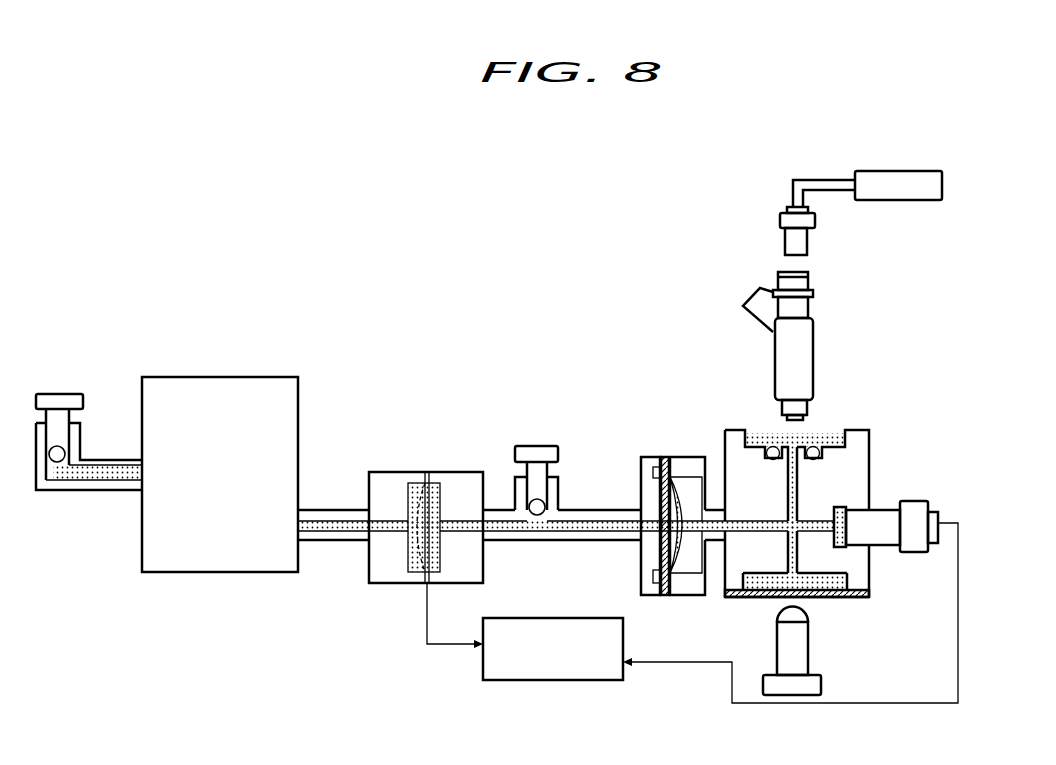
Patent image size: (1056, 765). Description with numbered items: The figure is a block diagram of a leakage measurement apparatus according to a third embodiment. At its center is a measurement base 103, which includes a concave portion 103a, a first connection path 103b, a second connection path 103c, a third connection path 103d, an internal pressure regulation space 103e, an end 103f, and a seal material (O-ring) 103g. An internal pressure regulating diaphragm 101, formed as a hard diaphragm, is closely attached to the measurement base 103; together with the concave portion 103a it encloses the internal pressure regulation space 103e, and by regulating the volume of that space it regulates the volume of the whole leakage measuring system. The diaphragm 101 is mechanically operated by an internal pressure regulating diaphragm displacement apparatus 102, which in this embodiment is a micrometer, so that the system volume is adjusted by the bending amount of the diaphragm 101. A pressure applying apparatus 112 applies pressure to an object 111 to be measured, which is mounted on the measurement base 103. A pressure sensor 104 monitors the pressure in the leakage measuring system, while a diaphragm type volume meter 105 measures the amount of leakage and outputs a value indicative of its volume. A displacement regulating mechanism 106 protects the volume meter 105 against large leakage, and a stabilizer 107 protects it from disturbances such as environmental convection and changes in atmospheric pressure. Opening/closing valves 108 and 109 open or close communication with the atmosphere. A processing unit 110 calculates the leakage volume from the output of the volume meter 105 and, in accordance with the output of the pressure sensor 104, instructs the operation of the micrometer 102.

The internal pressure regulating diaphragm 101 is at (870, 589).
The internal pressure regulating diaphragm displacement apparatus 102 is at (808, 652).
The measurement base 103 is at (869, 484).
The concave portion 103a is at (838, 597).
The first connection path 103b is at (797, 487).
The second connection path 103c is at (820, 520).
The third connection path 103d is at (745, 520).
The internal pressure regulation space 103e is at (757, 575).
The end 103f is at (805, 440).
The seal material (O-ring) 103g is at (817, 440).
The pressure sensor 104 is at (917, 500).
The diaphragm type volume meter 105 is at (433, 472).
The displacement regulating mechanism 106 is at (680, 457).
The stabilizer 107 is at (231, 377).
The opening/closing valve 108 is at (546, 446).
The opening/closing valve 109 is at (68, 394).
The processing unit 110 is at (483, 665).
The object to be measured 111 is at (815, 347).
The pressure applying apparatus 112 is at (900, 171).